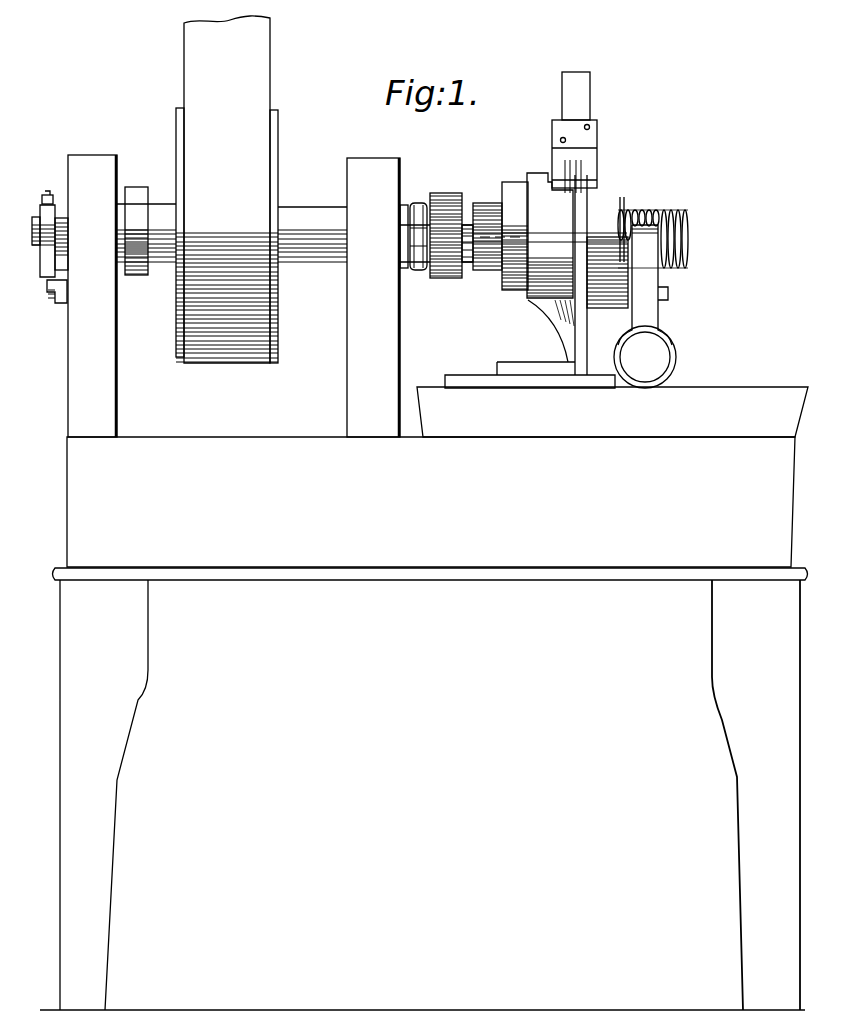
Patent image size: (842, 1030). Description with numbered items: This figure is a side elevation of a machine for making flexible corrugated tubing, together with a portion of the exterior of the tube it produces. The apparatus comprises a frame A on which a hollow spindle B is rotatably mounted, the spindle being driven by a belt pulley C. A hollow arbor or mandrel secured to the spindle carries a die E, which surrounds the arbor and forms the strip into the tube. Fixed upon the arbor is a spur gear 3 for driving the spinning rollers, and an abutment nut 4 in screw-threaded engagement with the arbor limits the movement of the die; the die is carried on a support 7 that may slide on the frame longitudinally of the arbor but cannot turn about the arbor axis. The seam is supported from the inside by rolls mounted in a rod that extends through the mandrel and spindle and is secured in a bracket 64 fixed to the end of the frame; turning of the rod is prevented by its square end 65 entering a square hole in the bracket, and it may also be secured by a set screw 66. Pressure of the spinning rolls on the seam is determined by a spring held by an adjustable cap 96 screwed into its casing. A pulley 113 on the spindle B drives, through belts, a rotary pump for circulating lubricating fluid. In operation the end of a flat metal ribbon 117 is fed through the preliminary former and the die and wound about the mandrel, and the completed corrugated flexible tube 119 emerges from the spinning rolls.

The frame A is at (424, 723).
The hollow spindle B is at (300, 217).
The belt pulley C is at (279, 114).
The die E is at (543, 190).
The spur gear 3 is at (447, 278).
The abutment nut 4 is at (490, 205).
The support 7 is at (581, 343).
The bracket 64 is at (48, 282).
The square end 65 is at (33, 217).
The set screw 66 is at (50, 195).
The adjustable cap 96 is at (657, 357).
The pulley 113 is at (138, 197).
The flat metal ribbon 117 is at (562, 98).
The completed corrugated flexible tube 119 is at (673, 211).